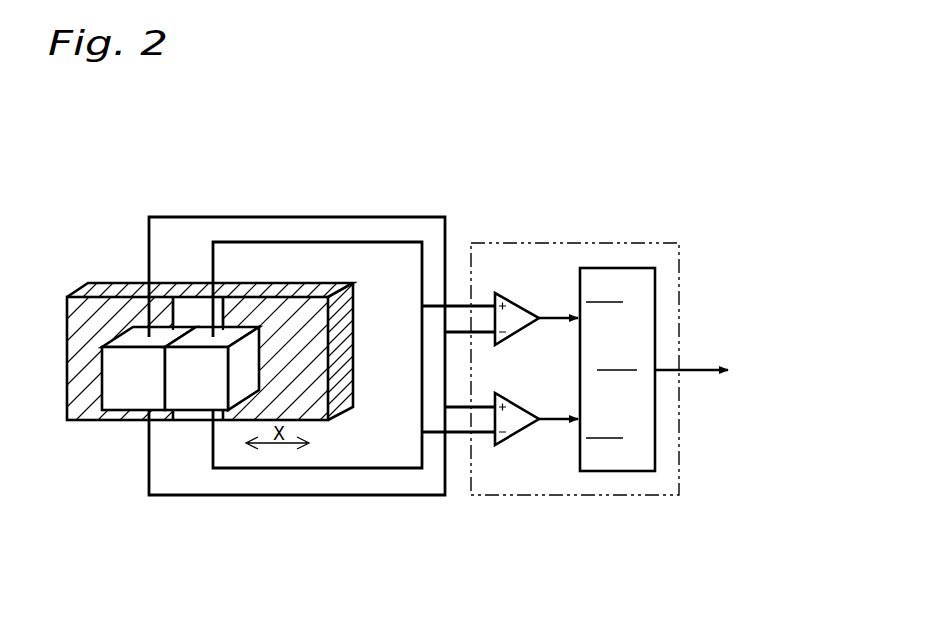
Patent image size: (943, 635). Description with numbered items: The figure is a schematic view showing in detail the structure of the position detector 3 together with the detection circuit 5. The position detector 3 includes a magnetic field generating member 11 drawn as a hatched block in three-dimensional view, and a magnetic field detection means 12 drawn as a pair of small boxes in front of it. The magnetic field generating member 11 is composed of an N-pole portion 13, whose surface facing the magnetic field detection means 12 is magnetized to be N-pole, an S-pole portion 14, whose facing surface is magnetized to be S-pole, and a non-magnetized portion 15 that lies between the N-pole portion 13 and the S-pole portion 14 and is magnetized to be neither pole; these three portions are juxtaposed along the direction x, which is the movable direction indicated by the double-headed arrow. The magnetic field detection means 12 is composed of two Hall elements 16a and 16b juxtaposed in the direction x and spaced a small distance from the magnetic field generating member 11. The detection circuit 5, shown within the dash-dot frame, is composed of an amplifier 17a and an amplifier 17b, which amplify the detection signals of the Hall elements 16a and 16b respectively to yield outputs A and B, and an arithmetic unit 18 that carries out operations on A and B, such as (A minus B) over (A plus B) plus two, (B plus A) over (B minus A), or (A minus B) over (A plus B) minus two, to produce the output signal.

The position detector 3 is at (110, 154).
The magnetic field generating member 11 is at (302, 300).
The magnetic field detection means 12 is at (203, 537).
The N-pole portion 13 is at (125, 303).
The S-pole portion 14 is at (260, 305).
The non-magnetized portion 15 is at (200, 305).
The Hall element 16a is at (205, 385).
The Hall element 16b is at (140, 385).
The detection circuit 5 is at (576, 243).
The amplifier 17a is at (518, 295).
The amplifier 17b is at (512, 446).
The arithmetic unit 18 is at (655, 312).